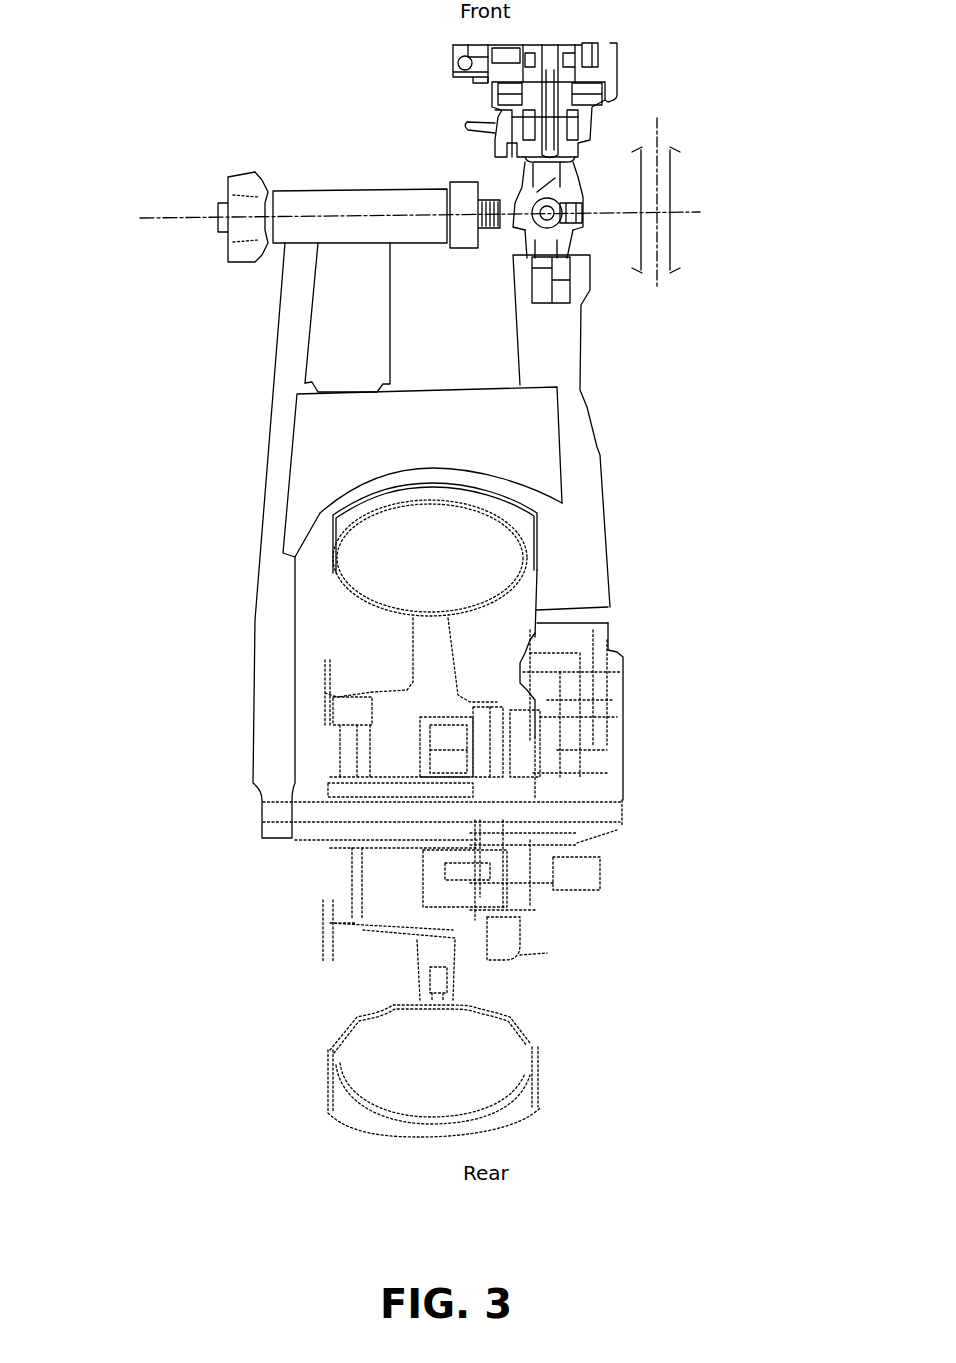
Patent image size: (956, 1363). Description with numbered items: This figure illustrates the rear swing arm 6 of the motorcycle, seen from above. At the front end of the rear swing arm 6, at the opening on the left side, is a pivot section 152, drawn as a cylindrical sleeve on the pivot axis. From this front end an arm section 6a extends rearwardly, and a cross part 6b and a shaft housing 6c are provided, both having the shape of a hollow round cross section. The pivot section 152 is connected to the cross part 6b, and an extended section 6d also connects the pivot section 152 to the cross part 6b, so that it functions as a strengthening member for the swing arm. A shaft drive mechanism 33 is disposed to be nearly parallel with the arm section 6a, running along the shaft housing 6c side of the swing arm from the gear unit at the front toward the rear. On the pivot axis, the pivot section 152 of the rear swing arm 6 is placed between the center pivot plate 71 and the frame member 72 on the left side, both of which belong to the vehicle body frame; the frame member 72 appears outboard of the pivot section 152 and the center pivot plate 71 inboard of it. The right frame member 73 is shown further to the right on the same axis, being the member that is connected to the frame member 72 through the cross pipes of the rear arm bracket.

The rear swing arm 6 is at (226, 588).
The arm section 6a is at (272, 478).
The cross part 6b is at (442, 407).
The shaft housing 6c is at (580, 412).
The extended section 6d is at (313, 350).
The shaft drive mechanism 33 is at (565, 348).
The center pivot plate 71 is at (463, 242).
The frame member 72 is at (235, 257).
The frame member 73 is at (663, 237).
The pivot section 152 is at (337, 191).